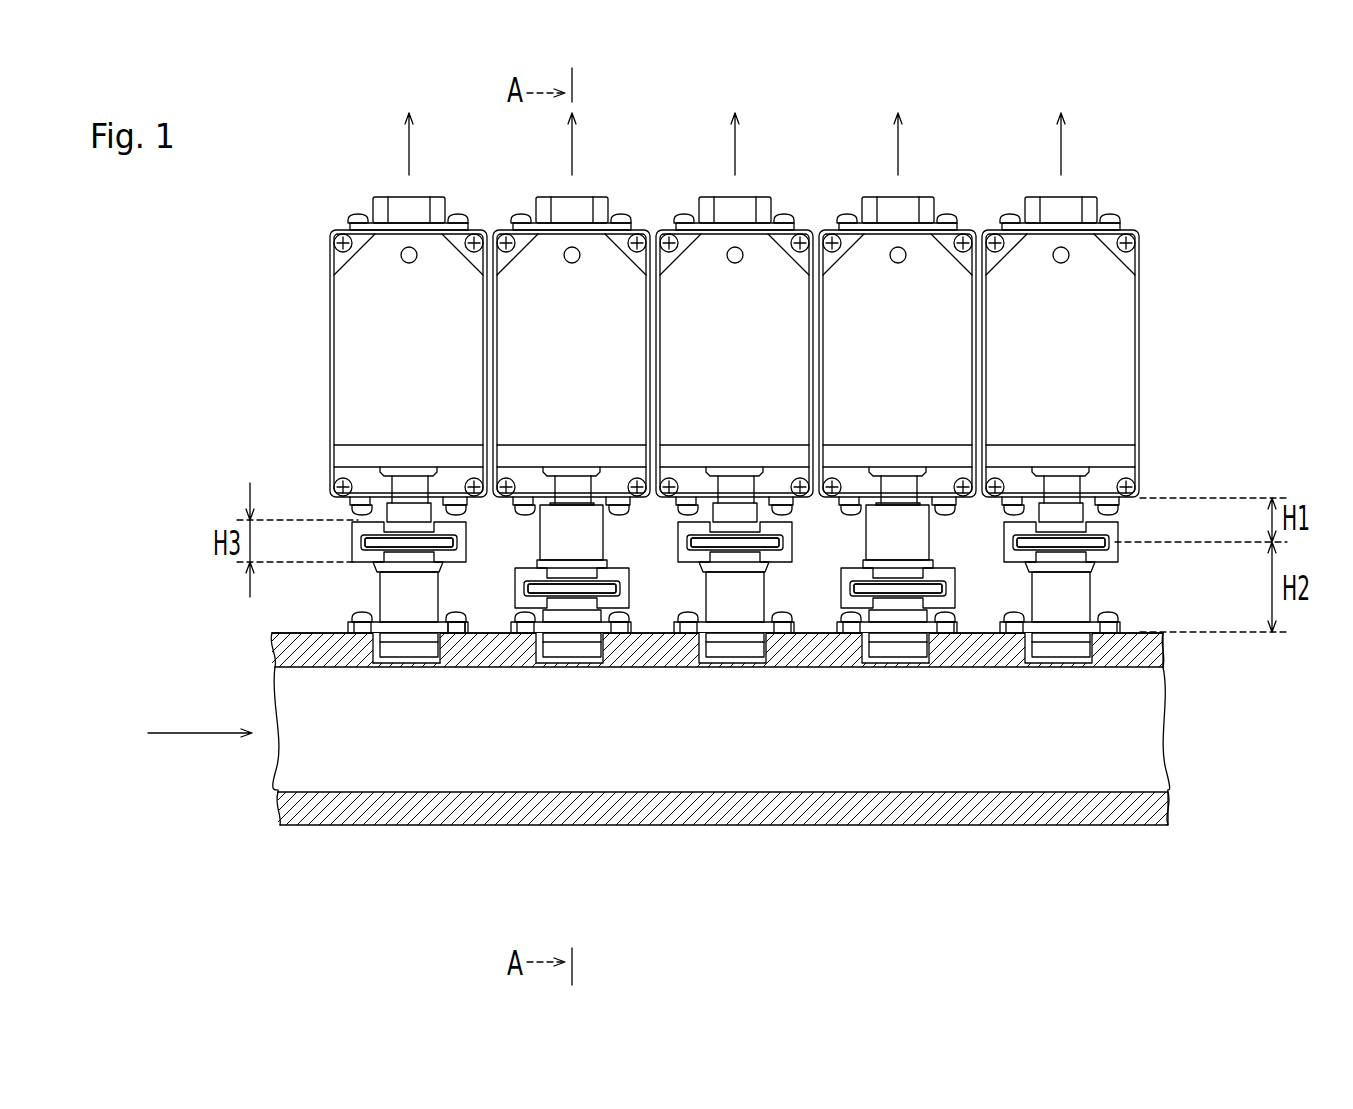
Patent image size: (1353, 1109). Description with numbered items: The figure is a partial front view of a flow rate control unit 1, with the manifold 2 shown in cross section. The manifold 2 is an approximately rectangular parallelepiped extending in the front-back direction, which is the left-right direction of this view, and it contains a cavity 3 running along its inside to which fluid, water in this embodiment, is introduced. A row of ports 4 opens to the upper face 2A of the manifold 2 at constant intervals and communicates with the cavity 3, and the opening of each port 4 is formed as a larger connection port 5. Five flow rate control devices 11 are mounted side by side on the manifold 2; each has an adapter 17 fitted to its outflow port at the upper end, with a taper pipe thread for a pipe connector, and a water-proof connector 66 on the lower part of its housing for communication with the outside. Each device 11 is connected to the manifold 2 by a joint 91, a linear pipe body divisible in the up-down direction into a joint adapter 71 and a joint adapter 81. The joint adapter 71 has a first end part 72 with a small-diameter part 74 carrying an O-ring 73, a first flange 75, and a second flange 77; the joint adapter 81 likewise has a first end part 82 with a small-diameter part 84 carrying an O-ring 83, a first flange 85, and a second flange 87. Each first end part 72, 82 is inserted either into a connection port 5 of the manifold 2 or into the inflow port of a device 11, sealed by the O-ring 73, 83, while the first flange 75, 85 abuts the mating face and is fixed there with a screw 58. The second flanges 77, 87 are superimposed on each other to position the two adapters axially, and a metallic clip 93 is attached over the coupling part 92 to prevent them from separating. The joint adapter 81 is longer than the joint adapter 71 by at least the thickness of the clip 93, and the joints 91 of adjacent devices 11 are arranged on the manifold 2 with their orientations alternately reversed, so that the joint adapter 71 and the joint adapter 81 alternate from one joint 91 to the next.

The flow rate control unit 1 is at (1209, 169).
The manifold 2 is at (258, 650).
The upper face 2A is at (292, 633).
The cavity 3 is at (292, 792).
The port 4 is at (548, 660).
The connection port 5 is at (1100, 637).
The flow rate control device 11 is at (463, 203).
The adapter 17 is at (403, 212).
The screw 58 is at (362, 513).
The water-proof connector 66 is at (395, 516).
The joint adapter 71 is at (1102, 487).
The first end part 72 is at (885, 663).
The O-ring 73 is at (787, 674).
The small-diameter part 74 is at (858, 665).
The first flange 75 is at (945, 663).
The second flange 77 is at (920, 663).
The joint adapter 81 is at (1101, 596).
The first end part 82 is at (400, 663).
The O-ring 83 is at (375, 650).
The small-diameter part 84 is at (392, 655).
The first flange 85 is at (447, 640).
The second flange 87 is at (418, 660).
The joint 91 is at (350, 571).
The coupling part 92 is at (398, 525).
The clip 93 is at (353, 533).